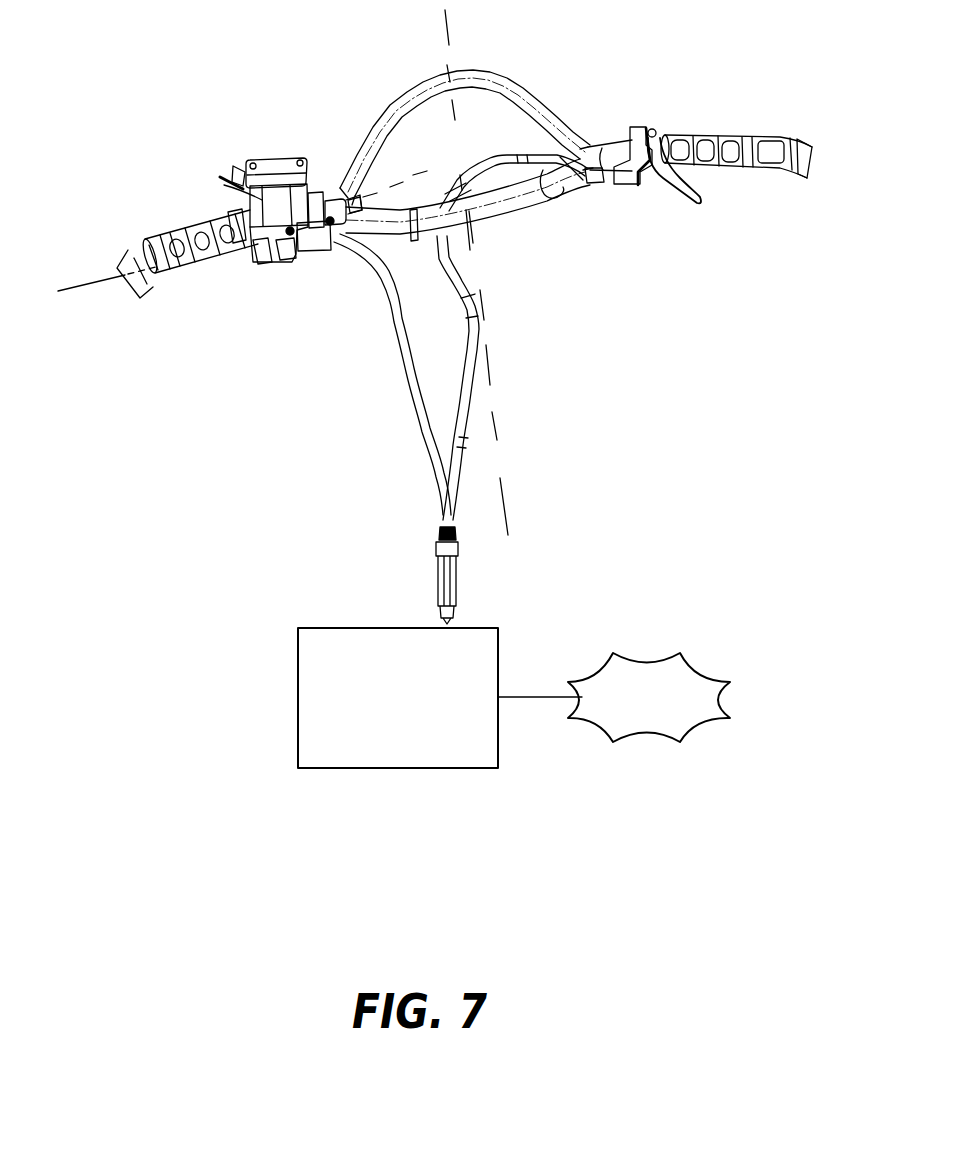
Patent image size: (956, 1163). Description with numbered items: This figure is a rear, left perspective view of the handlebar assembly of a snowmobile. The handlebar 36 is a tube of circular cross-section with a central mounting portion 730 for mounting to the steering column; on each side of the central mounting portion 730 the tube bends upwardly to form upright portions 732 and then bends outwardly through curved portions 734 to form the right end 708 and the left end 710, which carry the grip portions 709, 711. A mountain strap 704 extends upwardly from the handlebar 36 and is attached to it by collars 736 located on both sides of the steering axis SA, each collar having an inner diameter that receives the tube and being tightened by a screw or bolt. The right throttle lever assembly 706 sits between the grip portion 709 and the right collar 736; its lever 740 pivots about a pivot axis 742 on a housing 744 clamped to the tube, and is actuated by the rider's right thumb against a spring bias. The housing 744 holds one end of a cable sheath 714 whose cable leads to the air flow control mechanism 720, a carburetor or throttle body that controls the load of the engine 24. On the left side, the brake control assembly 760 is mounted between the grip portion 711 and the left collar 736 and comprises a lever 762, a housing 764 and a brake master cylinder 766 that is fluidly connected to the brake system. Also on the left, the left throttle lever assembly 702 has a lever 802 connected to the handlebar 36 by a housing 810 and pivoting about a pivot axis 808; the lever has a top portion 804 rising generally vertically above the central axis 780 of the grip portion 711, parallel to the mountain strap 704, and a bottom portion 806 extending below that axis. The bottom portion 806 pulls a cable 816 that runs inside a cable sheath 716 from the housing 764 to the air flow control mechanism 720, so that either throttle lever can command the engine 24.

The engine 24 is at (648, 660).
The handlebar 36 is at (413, 74).
The left throttle lever assembly 702 is at (311, 257).
The mountain strap 704 is at (455, 80).
The right throttle lever assembly 706 is at (642, 124).
The right end 708 is at (807, 152).
The grip portion 709 is at (730, 135).
The left end 710 is at (125, 287).
The grip portion 711 is at (147, 250).
The cable sheath 714 is at (477, 326).
The cable sheath 716 is at (406, 367).
The air flow control mechanism 720 is at (337, 627).
The central mounting portion 730 is at (474, 222).
The upright portion 732 is at (560, 183).
The curved portion 734 is at (313, 200).
The collar 736 is at (402, 230).
The lever 740 is at (698, 202).
The pivot axis 742 is at (652, 140).
The housing 744 is at (668, 133).
The brake control assembly 760 is at (280, 160).
The lever 762 is at (173, 237).
The housing 764 is at (230, 176).
The brake master cylinder 766 is at (267, 167).
The central axis 780 is at (92, 272).
The lever 802 is at (240, 248).
The top portion 804 is at (298, 197).
The bottom portion 806 is at (248, 253).
The pivot axis 808 is at (280, 267).
The housing 810 is at (325, 232).
The cable 816 is at (297, 240).
The steering axis SA is at (497, 420).